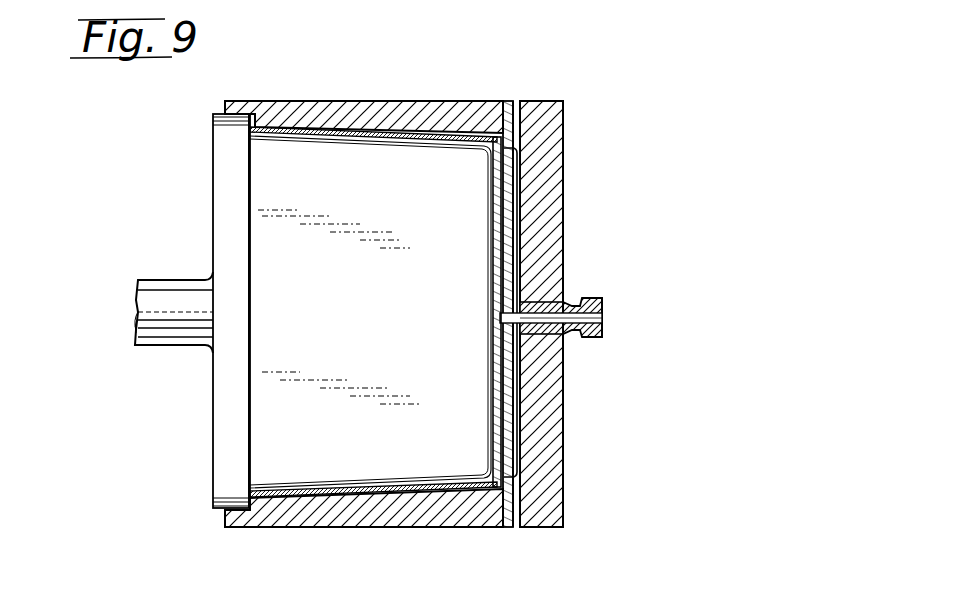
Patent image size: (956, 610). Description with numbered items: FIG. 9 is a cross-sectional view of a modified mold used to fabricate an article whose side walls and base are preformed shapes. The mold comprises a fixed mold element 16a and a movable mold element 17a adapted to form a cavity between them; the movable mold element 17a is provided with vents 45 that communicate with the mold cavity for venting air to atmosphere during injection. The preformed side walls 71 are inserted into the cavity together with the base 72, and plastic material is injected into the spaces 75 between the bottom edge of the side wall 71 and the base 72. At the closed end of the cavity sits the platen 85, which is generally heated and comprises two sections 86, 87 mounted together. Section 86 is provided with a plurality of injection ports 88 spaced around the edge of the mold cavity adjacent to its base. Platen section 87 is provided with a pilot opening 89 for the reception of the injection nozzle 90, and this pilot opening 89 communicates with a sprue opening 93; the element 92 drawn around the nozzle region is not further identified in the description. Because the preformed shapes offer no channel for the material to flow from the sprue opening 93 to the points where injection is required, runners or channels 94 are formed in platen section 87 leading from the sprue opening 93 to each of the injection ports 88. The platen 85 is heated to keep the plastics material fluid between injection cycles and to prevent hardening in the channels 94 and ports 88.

The fixed mold element 16a is at (366, 80).
The movable mold element 17a is at (210, 440).
The vents 45 is at (231, 128).
The side walls 71 is at (348, 140).
The base 72 is at (494, 243).
The spaces 75 is at (481, 508).
The platen 85 is at (438, 309).
The platen section 86 is at (508, 101).
The platen section 87 is at (548, 134).
The injection ports 88 is at (493, 152).
The pilot opening 89 is at (565, 298).
The injection nozzle 90 is at (604, 327).
The insert 92 is at (540, 330).
The sprue opening 93 is at (512, 318).
The channels 94 is at (520, 232).